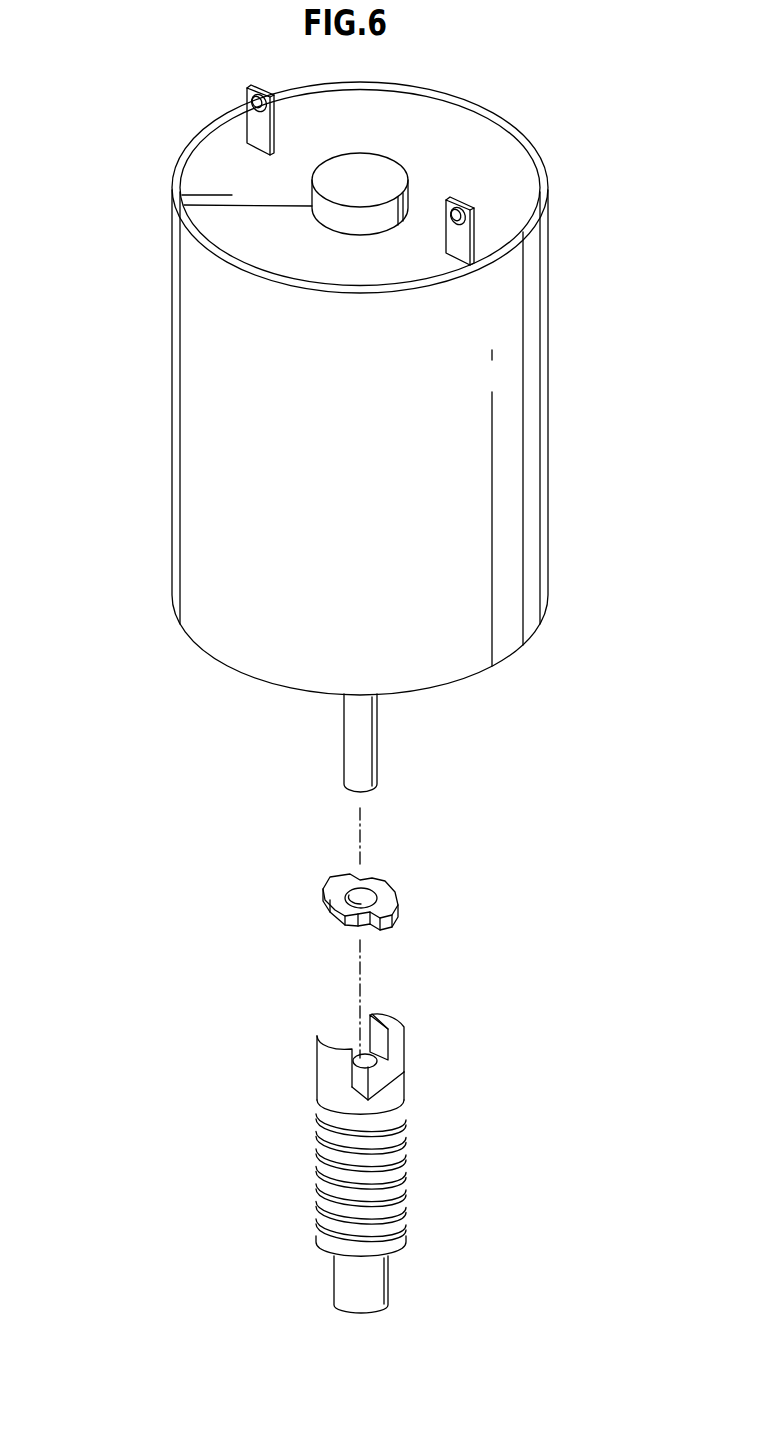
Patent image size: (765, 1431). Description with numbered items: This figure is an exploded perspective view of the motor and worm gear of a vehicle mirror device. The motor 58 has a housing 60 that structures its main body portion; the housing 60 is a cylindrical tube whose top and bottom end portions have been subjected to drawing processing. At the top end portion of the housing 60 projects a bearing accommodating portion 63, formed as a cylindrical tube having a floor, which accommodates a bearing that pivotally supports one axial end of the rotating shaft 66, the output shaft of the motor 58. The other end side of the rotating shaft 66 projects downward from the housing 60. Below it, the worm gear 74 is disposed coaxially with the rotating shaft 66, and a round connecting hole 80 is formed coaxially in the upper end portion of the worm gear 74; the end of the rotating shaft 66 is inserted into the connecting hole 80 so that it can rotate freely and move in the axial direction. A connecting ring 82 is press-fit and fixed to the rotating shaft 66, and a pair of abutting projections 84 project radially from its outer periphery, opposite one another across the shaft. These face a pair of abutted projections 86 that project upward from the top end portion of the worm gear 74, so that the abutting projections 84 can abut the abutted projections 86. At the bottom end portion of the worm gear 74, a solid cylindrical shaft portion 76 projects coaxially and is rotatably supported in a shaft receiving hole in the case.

The motor 58 is at (172, 321).
The housing 60 is at (212, 463).
The bearing accommodating portion 63 is at (387, 167).
The rotating shaft 66 is at (367, 748).
The connecting ring 82 is at (378, 887).
The abutting projections 84 is at (321, 897).
The worm gear 74 is at (318, 1158).
The shaft portion 76 is at (337, 1278).
The connecting hole 80 is at (406, 1065).
The abutted projections 86 is at (321, 1056).